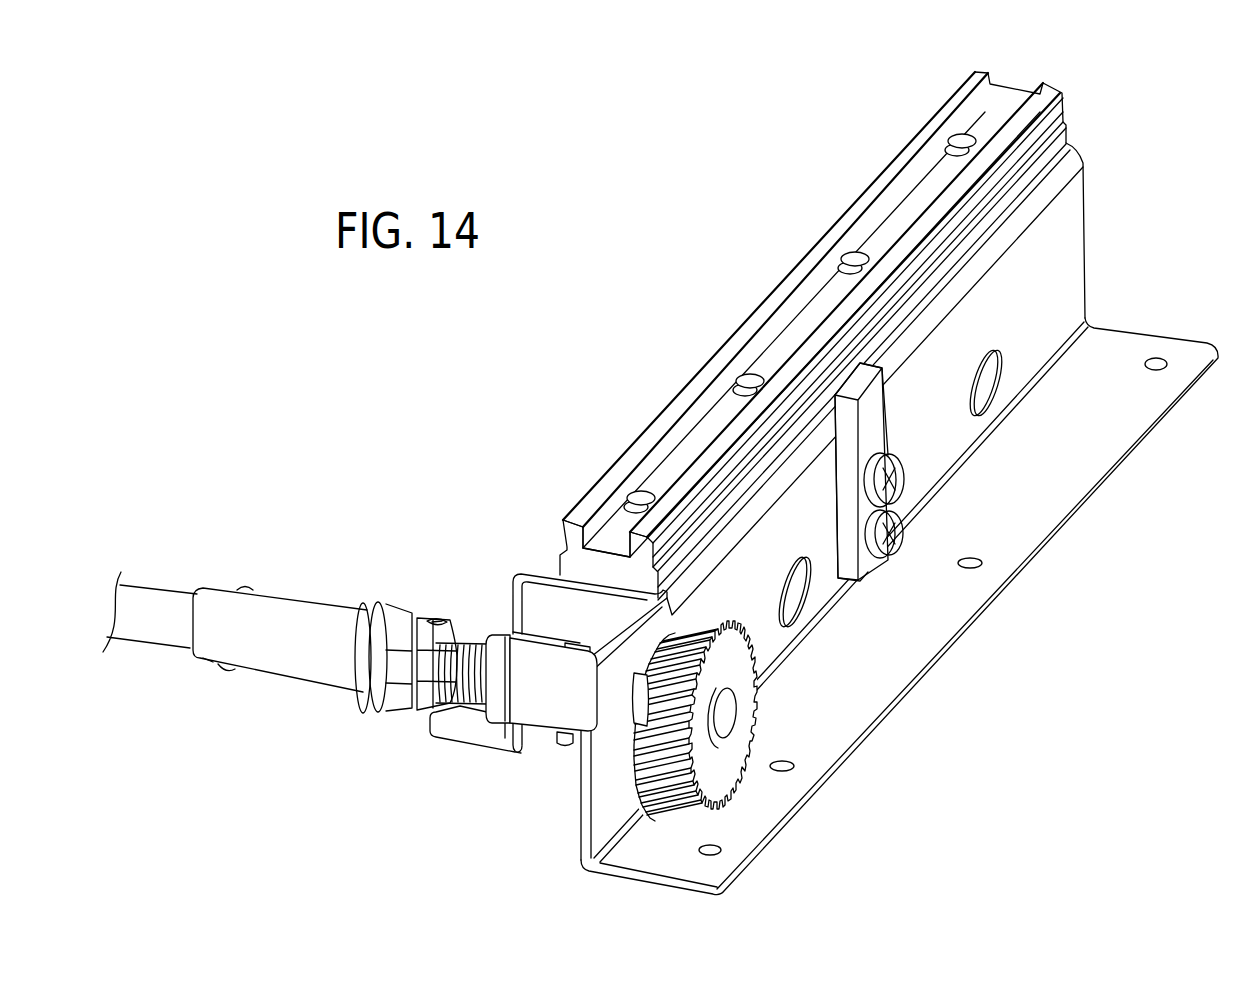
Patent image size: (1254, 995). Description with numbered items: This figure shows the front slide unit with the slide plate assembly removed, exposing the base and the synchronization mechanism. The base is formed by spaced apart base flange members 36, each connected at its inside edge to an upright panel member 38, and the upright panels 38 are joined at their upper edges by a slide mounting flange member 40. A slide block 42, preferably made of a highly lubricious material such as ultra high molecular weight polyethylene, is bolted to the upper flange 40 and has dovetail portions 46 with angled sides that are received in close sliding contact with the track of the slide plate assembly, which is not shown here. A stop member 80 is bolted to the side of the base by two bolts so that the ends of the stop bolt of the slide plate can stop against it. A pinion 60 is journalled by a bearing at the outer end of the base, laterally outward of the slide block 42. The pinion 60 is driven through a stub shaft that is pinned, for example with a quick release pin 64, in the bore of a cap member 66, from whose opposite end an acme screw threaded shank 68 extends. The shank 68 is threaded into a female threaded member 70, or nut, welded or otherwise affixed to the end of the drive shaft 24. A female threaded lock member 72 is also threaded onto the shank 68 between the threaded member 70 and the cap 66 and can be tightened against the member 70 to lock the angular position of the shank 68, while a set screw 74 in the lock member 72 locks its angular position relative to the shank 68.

The drive shaft 24 is at (283, 618).
The base flange member 36 is at (1036, 506).
The upright panel member 38 is at (583, 832).
The slide mounting flange member 40 is at (550, 573).
The slide block 42 is at (1011, 97).
The dovetail portions 46 is at (637, 540).
The pinion 60 is at (718, 767).
The quick release pin 64 is at (563, 745).
The cap member 66 is at (547, 712).
The threaded shank 68 is at (463, 708).
The female threaded member 70 is at (402, 620).
The female threaded lock member 72 is at (437, 623).
The set screw 74 is at (428, 648).
The stop member 80 is at (877, 413).